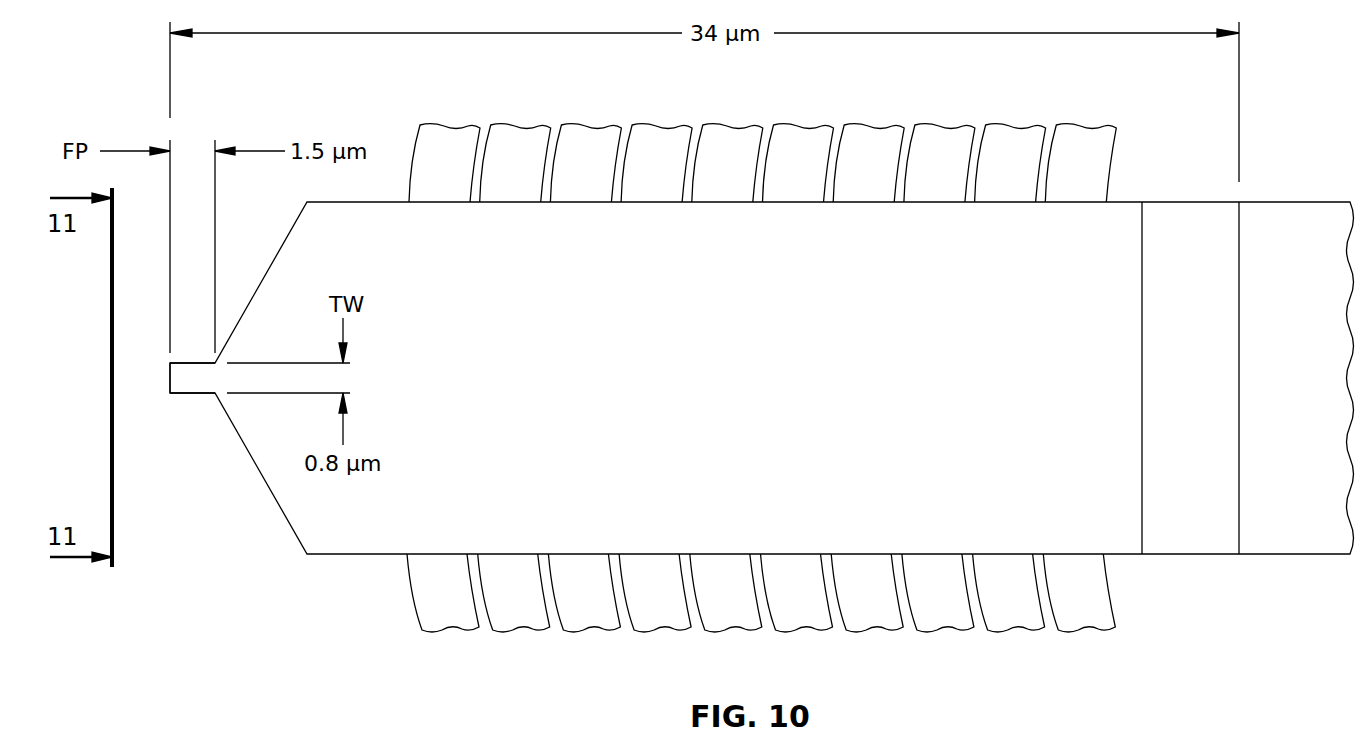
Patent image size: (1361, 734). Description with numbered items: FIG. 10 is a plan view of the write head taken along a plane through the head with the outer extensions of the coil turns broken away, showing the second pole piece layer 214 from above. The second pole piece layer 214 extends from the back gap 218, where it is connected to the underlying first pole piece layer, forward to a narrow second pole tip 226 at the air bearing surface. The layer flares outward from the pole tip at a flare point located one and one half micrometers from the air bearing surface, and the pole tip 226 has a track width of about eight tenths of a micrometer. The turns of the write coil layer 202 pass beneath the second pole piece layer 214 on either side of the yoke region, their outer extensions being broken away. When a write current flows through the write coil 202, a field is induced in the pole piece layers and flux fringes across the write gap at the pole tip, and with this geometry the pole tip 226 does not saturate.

The write coil layer 202 is at (575, 623).
The second pole piece layer 214 is at (791, 387).
The back gap 218 is at (1152, 287).
The second pole tip 226 is at (185, 385).